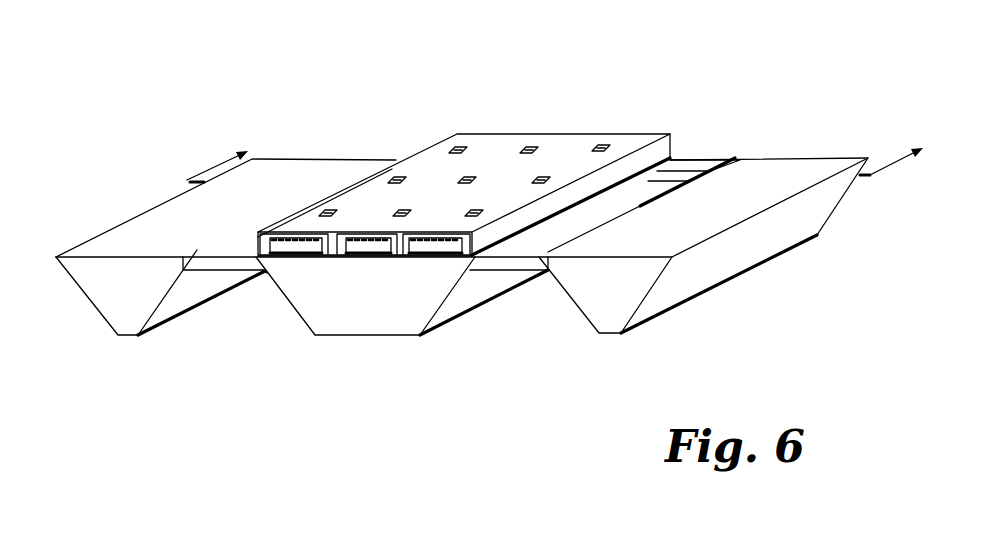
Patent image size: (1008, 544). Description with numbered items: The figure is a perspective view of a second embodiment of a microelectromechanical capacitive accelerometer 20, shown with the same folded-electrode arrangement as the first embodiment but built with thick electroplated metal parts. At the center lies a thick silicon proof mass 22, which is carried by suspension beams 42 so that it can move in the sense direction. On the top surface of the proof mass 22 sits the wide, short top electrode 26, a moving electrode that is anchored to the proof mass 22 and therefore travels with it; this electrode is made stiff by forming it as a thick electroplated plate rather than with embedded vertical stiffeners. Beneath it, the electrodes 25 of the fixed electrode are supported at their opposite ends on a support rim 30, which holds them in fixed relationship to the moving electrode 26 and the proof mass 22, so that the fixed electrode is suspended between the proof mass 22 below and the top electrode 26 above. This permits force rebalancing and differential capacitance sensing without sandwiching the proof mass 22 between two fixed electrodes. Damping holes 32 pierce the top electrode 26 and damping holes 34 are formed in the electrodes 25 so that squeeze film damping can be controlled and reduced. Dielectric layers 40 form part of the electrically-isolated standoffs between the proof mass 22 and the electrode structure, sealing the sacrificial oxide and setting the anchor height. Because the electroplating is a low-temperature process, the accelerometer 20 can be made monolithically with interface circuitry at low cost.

The microelectromechanical capacitive accelerometer 20 is at (668, 113).
The proof mass 22 is at (365, 337).
The electrodes of the fixed electrode 25 is at (285, 258).
The top electrode 26 is at (607, 133).
The support rim 30 is at (150, 217).
The damping holes 32 is at (601, 144).
The damping holes 34 is at (287, 235).
The dielectric layers 40 is at (260, 275).
The suspension beams 42 is at (395, 162).